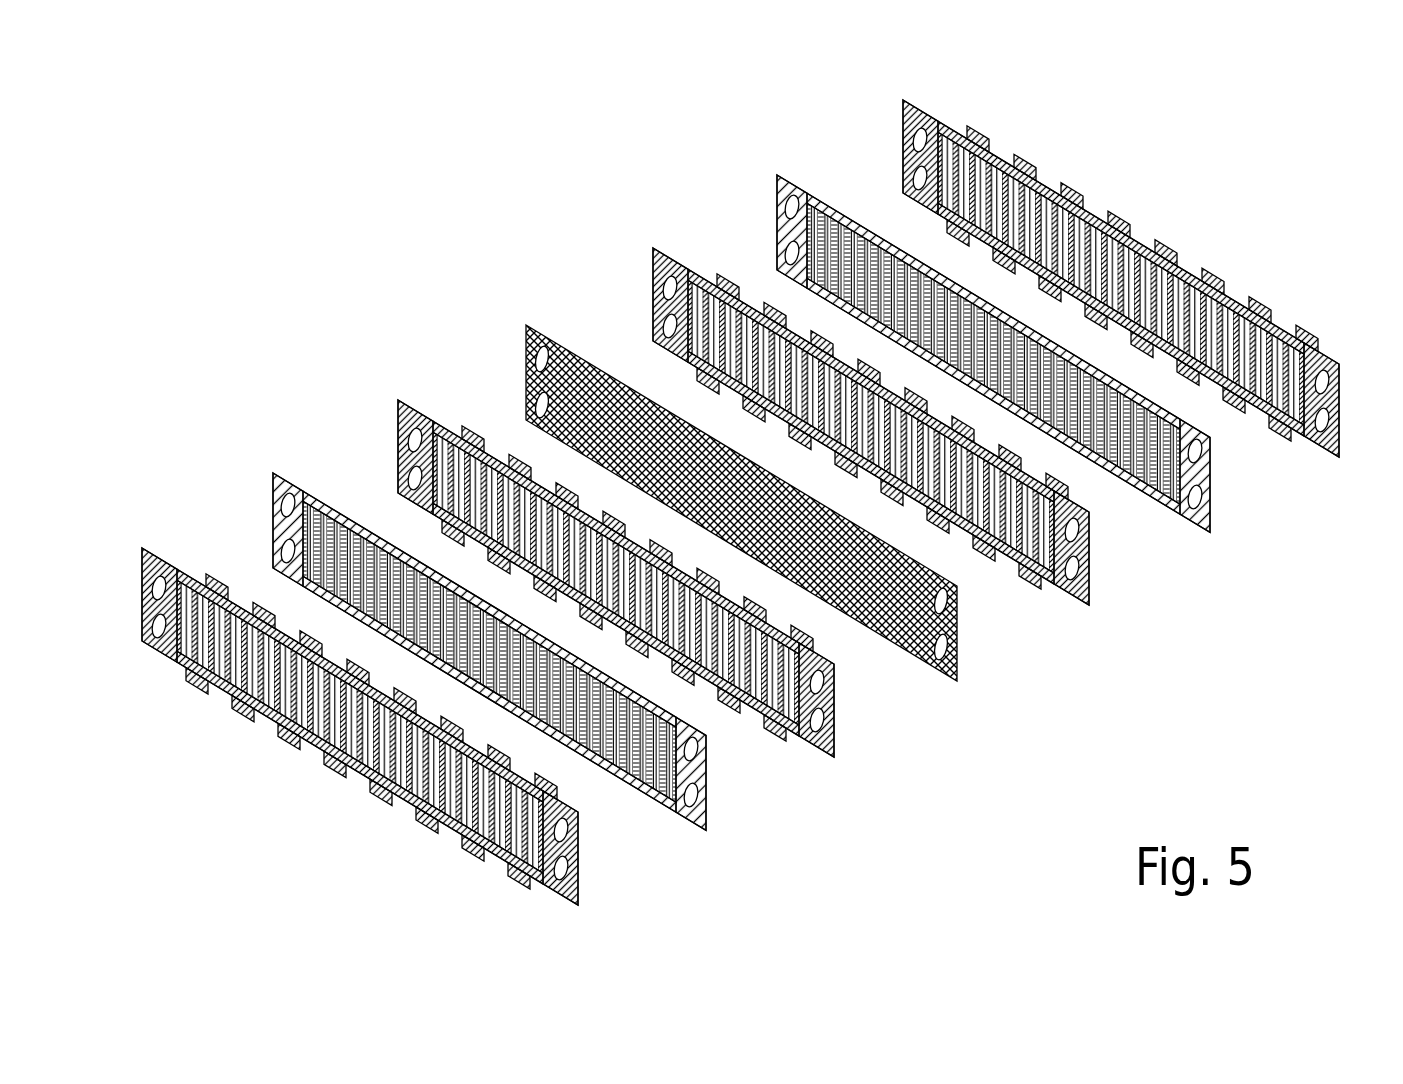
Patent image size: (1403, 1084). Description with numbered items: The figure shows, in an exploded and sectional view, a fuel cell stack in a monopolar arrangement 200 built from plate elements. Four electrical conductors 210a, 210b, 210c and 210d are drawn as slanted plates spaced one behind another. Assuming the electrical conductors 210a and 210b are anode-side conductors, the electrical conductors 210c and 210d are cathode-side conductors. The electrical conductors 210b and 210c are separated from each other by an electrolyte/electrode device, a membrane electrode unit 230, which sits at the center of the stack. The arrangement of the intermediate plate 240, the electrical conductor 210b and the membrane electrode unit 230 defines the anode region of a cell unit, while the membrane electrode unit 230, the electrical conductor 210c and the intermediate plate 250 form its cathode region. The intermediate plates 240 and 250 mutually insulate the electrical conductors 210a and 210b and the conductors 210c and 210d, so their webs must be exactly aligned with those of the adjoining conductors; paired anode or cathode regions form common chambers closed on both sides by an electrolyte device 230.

The monopolar arrangement 200 is at (740, 507).
The electrical conductor 210a is at (578, 872).
The electrical conductor 210b is at (834, 728).
The electrical conductor 210c is at (653, 290).
The electrical conductor 210d is at (903, 140).
The membrane electrode unit 230 is at (957, 652).
The intermediate plate 240 is at (705, 797).
The intermediate plate 250 is at (777, 200).